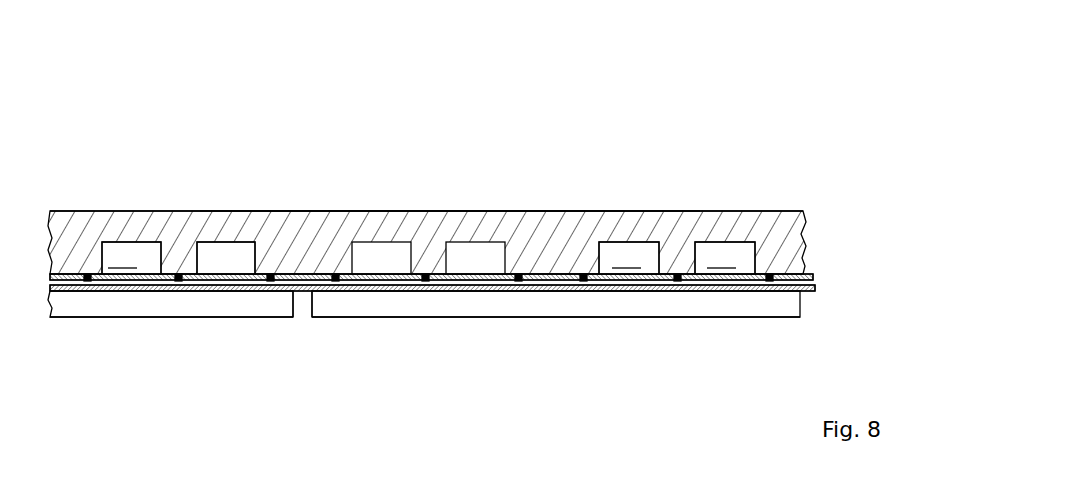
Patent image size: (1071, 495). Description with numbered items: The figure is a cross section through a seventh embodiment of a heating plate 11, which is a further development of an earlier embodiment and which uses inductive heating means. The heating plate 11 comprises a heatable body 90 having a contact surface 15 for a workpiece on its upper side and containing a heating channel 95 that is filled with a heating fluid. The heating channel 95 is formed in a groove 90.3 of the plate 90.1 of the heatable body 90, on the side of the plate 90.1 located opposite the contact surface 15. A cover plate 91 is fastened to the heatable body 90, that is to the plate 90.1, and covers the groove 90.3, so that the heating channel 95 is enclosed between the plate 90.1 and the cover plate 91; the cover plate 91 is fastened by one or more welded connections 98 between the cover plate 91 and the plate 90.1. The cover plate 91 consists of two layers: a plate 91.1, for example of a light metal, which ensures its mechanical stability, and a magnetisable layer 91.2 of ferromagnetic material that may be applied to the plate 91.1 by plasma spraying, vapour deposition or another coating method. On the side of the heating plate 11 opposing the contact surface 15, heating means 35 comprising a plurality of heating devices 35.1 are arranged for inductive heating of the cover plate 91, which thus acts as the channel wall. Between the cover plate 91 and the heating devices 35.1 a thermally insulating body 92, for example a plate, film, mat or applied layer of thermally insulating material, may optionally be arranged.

The heating plate 11 is at (786, 56).
The contact surface 15 is at (542, 211).
The heating means 35 is at (337, 332).
The heating devices 35.1 is at (55, 310).
The heatable body 90 is at (787, 203).
The plate 90.1 is at (72, 211).
The groove 90.3 is at (202, 240).
The cover plate 91 is at (826, 267).
The plate 91.1 is at (814, 278).
The magnetisable layer 91.2 is at (815, 289).
The thermally insulating body 92 is at (803, 294).
The heating channel 95 is at (458, 252).
The welded connections 98 is at (270, 281).